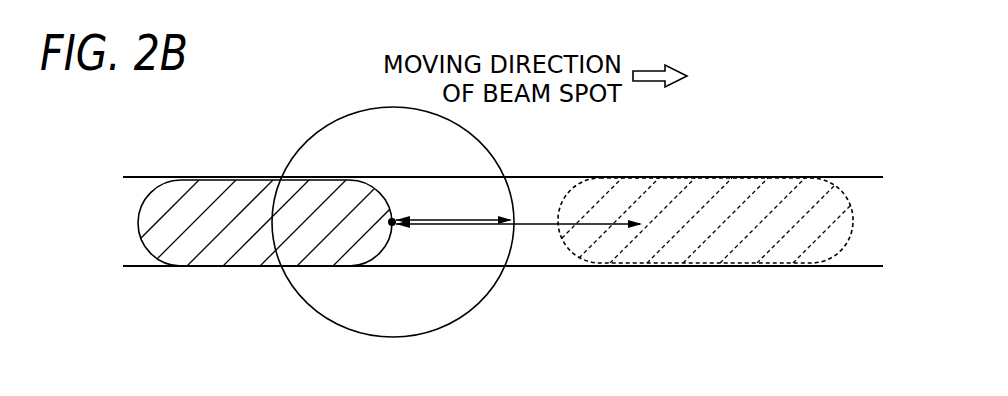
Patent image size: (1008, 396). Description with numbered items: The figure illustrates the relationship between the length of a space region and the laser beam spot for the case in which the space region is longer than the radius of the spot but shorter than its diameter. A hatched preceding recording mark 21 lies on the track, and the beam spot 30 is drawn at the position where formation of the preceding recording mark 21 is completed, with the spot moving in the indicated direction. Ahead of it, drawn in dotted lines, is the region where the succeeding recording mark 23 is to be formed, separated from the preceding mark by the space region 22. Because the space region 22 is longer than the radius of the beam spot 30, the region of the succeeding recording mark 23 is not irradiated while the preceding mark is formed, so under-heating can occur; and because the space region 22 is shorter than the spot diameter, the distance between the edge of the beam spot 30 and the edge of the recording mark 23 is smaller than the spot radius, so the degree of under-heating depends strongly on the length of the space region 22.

The preceding recording mark 21 is at (248, 188).
The space region 22 is at (442, 246).
The succeeding recording mark 23 is at (705, 187).
The beam spot 30 is at (294, 292).